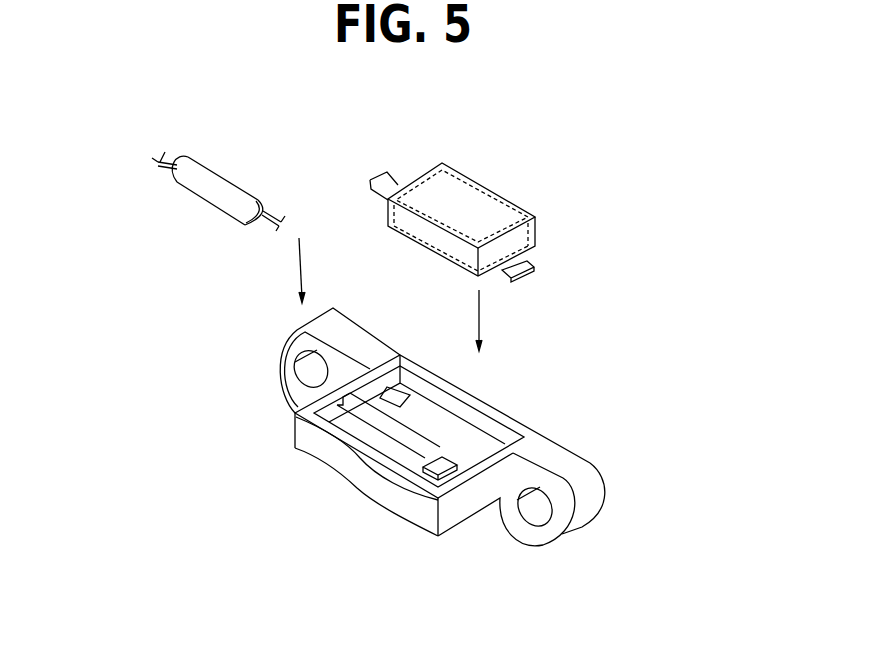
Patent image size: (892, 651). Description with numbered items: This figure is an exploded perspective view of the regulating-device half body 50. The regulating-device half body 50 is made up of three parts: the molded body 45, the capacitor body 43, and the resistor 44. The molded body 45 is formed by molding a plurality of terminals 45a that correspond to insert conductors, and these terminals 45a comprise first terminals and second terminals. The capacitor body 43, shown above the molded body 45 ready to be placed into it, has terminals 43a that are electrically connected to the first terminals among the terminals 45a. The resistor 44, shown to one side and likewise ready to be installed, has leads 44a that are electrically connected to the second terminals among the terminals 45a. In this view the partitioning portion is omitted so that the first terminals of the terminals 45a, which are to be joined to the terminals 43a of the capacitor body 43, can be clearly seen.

The capacitor body 43 is at (478, 190).
The terminals of the capacitor body 43a is at (532, 267).
The resistor 44 is at (219, 188).
The leads of the resistor 44a is at (260, 226).
The molded body 45 is at (452, 508).
The terminals 45a is at (383, 403).
The regulating-device half body 50 is at (617, 337).